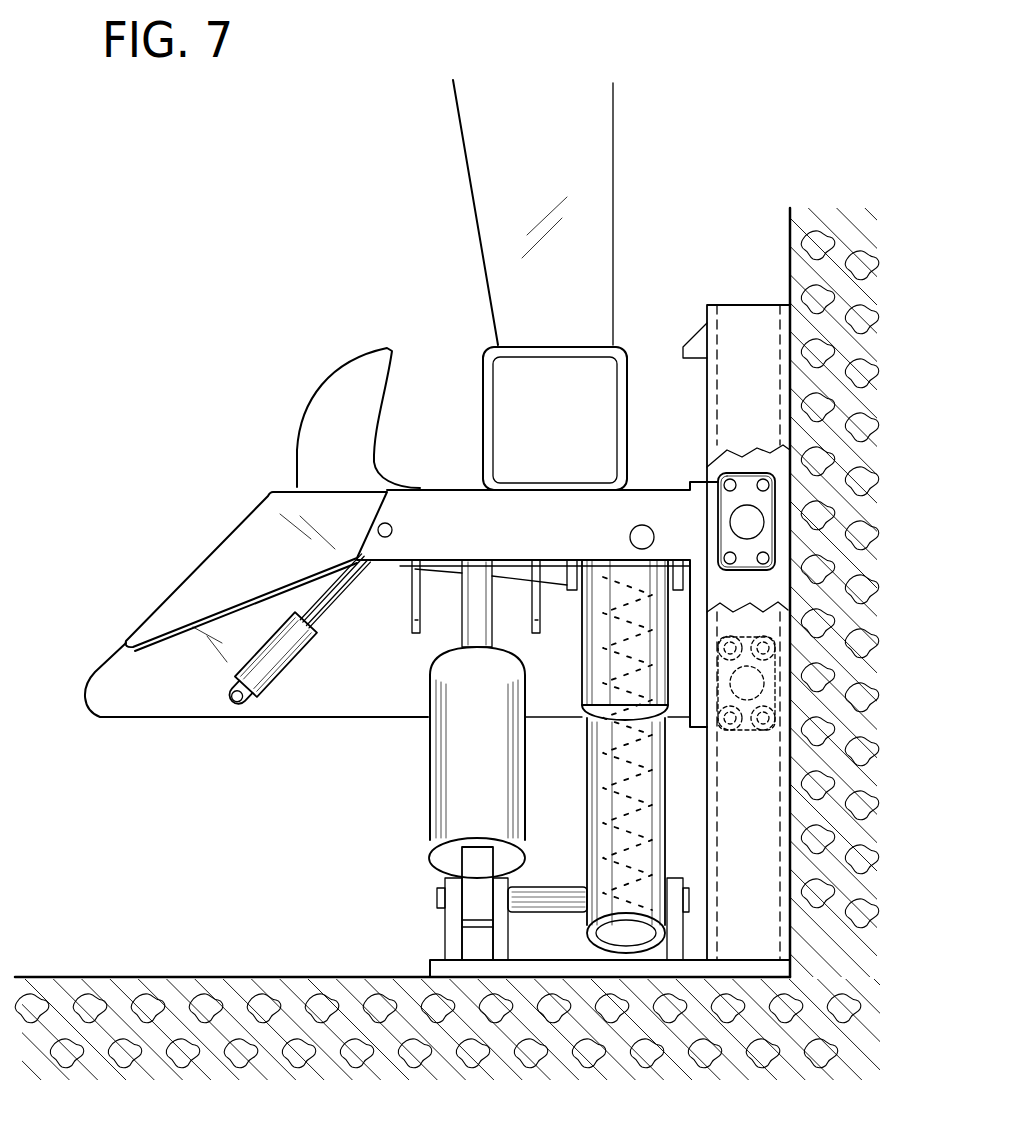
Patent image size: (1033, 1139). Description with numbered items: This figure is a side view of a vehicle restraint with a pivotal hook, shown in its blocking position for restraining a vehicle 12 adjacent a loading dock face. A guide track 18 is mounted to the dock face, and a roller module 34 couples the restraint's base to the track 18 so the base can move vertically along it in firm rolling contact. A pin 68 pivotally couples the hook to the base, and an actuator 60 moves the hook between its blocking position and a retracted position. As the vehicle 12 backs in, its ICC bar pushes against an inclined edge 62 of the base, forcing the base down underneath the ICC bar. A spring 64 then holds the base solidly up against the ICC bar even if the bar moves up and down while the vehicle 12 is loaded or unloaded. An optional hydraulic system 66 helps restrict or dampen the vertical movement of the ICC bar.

The vehicle 12 is at (470, 198).
The guide track 18 is at (745, 305).
The roller module 34 is at (747, 473).
The actuator 60 is at (270, 676).
The inclined edge 62 is at (181, 587).
The spring 64 is at (598, 822).
The hydraulic system 66 is at (430, 790).
The pin 68 is at (628, 537).